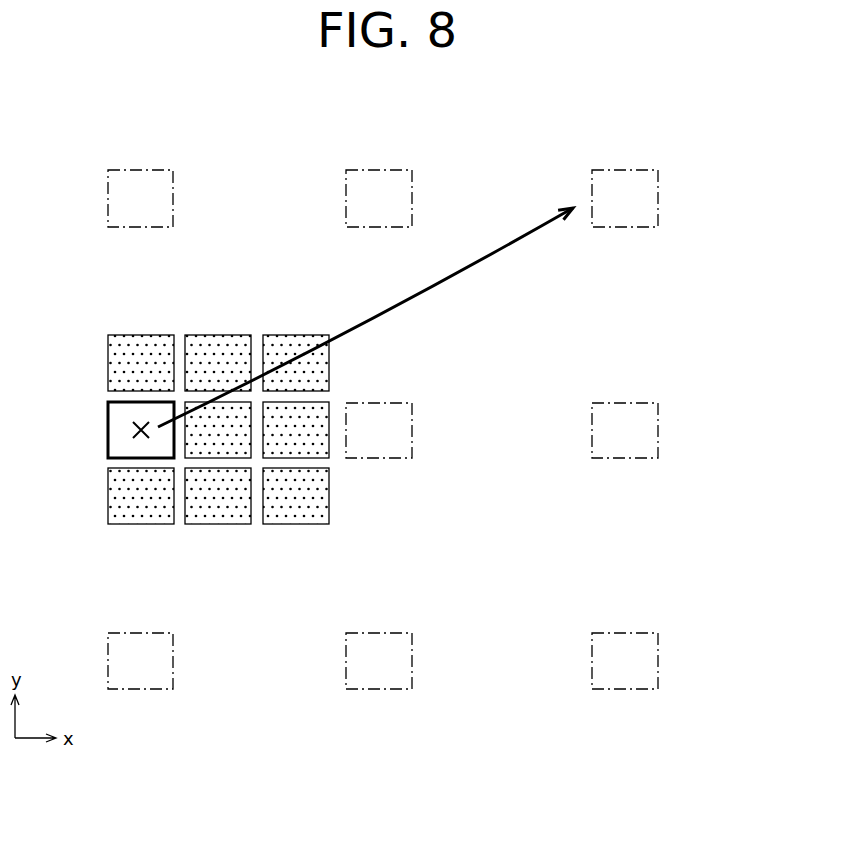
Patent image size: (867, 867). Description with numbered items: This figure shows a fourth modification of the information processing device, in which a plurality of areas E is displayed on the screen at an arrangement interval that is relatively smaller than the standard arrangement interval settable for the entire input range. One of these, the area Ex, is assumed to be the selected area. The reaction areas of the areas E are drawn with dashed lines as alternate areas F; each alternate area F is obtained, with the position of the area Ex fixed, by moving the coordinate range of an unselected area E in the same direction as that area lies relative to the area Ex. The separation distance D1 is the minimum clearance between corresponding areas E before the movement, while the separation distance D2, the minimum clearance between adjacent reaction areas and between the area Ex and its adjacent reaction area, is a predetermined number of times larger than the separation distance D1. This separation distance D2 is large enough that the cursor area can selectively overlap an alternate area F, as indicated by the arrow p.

The area E is at (233, 335).
The selected area Ex is at (108, 430).
The alternate area F is at (658, 193).
The arrow p is at (457, 278).
The separation distance D1 is at (185, 333).
The separation distance D2 is at (348, 168).